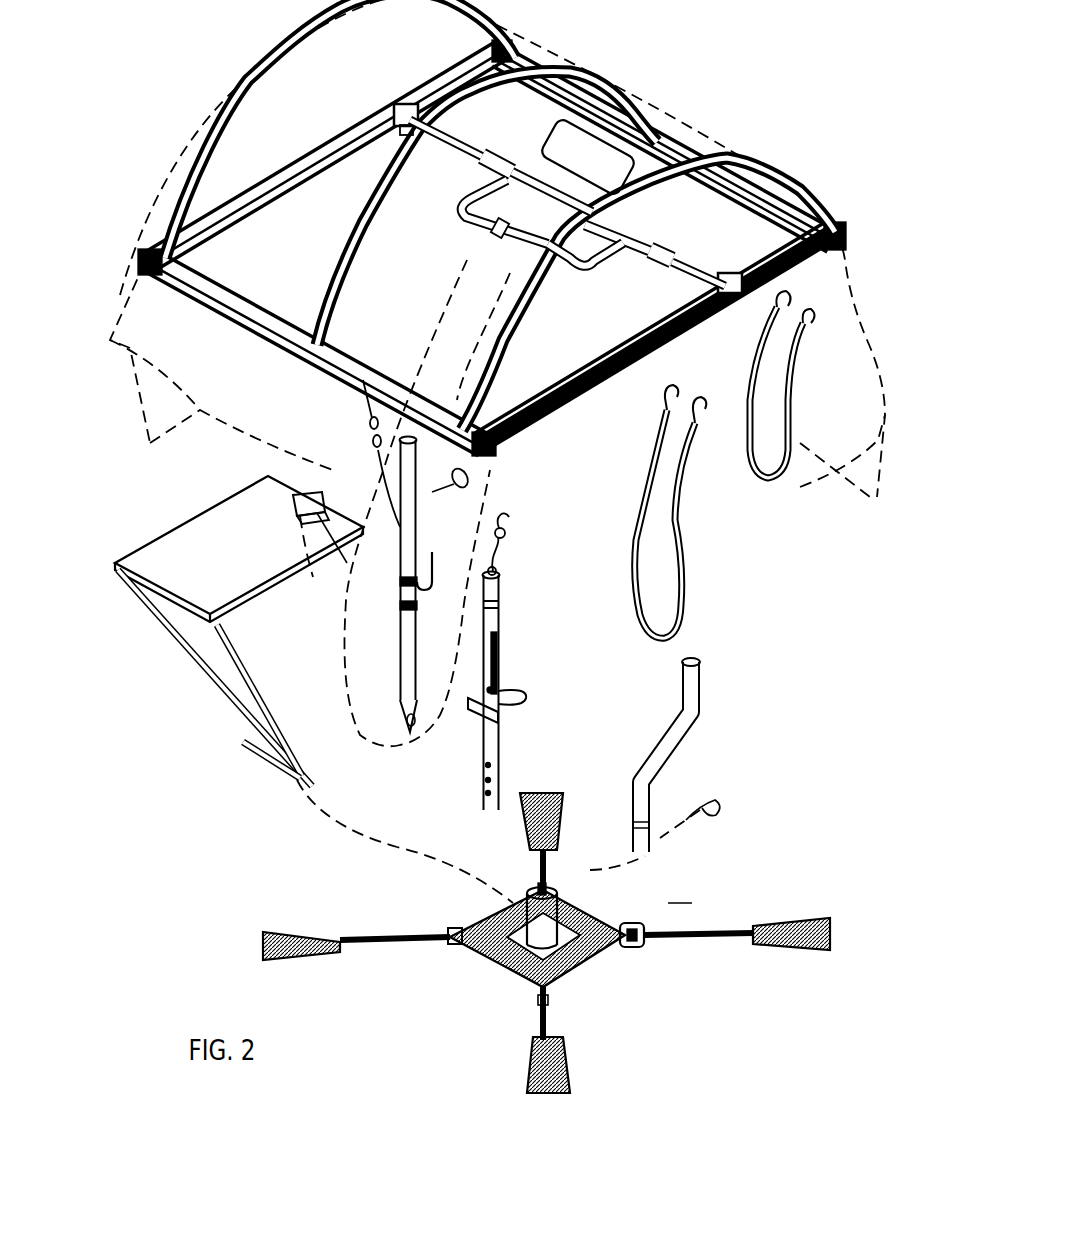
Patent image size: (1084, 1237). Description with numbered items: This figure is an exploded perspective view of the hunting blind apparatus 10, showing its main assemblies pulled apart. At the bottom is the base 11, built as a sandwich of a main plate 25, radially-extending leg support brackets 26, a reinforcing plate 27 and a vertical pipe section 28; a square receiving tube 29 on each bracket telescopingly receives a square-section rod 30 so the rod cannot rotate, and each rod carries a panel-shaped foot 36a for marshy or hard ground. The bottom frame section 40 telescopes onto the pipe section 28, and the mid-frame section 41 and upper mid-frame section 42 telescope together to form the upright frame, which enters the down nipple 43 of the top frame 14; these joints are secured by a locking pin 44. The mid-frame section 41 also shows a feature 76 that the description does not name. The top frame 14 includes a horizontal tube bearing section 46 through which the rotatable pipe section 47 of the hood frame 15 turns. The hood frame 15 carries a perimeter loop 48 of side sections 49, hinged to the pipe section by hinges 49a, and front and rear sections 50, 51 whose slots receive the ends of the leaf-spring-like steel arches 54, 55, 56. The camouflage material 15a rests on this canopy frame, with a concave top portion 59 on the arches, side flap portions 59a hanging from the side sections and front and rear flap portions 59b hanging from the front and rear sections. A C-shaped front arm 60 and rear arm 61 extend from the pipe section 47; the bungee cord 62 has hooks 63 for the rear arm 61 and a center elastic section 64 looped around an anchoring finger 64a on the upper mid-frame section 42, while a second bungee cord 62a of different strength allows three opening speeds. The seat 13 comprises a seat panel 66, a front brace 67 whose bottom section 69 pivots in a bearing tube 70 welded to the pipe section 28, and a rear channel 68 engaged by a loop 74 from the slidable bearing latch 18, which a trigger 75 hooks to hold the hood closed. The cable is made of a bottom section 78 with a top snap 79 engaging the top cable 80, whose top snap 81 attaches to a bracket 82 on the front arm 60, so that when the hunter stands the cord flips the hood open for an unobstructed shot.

The hunting blind apparatus 10 is at (808, 80).
The base 11 is at (438, 1000).
The seat 13 is at (146, 532).
The top frame 14 is at (586, 172).
The hood frame 15 is at (483, 231).
The camouflage material 15a is at (158, 218).
The slidable bearing latch 18 is at (499, 702).
The main plate 25 is at (600, 960).
The leg support brackets 26 is at (600, 915).
The reinforcing plate 27 is at (500, 920).
The vertical pipe section 28 is at (540, 890).
The receiving tube 29 is at (455, 945).
The rods 30 is at (380, 936).
The foot 36a is at (290, 933).
The bottom frame section 40 is at (692, 745).
The mid-frame section 41 is at (532, 655).
The upper mid-frame section 42 is at (390, 556).
The nipple 43 is at (462, 210).
The locking pin 44 is at (470, 478).
The horizontal tube bearing section 46 is at (620, 190).
The rotatable pipe section 47 is at (642, 234).
The perimeter loop 48 is at (320, 146).
The side sections 49 is at (238, 190).
The hinges 49a is at (402, 136).
The front section 50 is at (255, 305).
The rear section 51 is at (527, 62).
The arch 54 is at (270, 70).
The arch 55 is at (368, 218).
The arch 56 is at (505, 350).
The concave top portion 59 is at (212, 162).
The side flap portions 59a is at (143, 410).
The front and rear flap portions 59b is at (235, 430).
The front arm 60 is at (565, 278).
The rear arm 61 is at (592, 138).
The bungee cord 62 is at (678, 508).
The second bungee cord 62a is at (750, 462).
The hooks 63 is at (678, 388).
The center elastic section 64 is at (635, 607).
The anchoring finger 64a is at (436, 566).
The seat panel 66 is at (214, 559).
The front brace 67 is at (217, 712).
The channel 68 is at (318, 557).
The bottom section 69 is at (290, 780).
The bearing tube 70 is at (555, 910).
The loop 74 is at (478, 722).
The trigger 75 is at (506, 694).
The slot 76 is at (500, 742).
The bottom section 78 is at (500, 571).
The top snap 79 is at (506, 526).
The top cable 80 is at (381, 469).
The top snap 81 is at (370, 438).
The bracket 82 is at (500, 238).